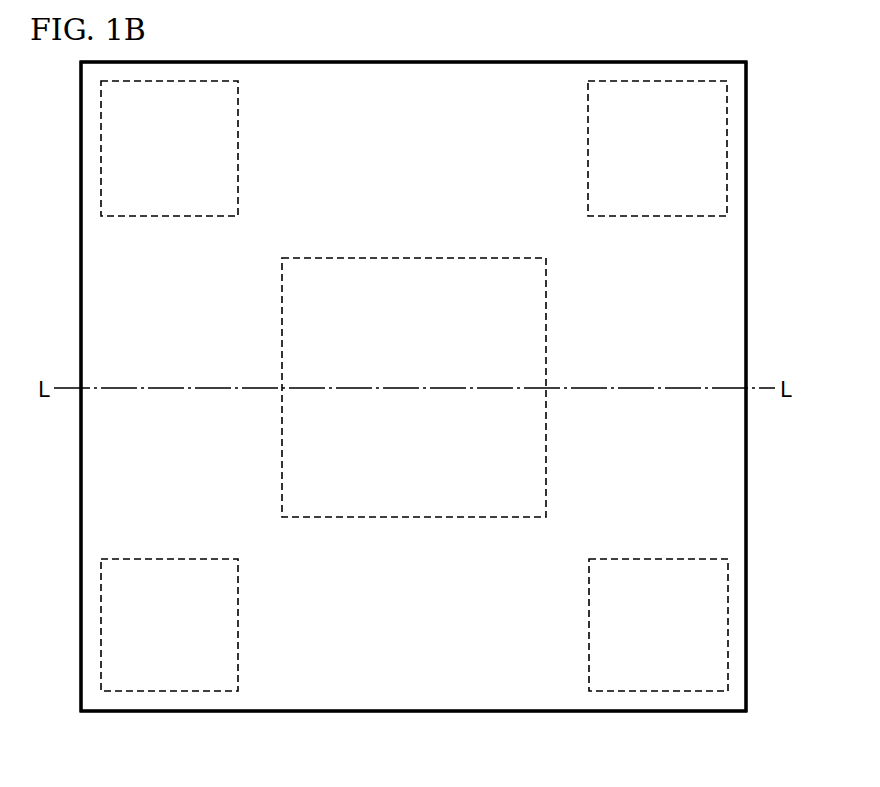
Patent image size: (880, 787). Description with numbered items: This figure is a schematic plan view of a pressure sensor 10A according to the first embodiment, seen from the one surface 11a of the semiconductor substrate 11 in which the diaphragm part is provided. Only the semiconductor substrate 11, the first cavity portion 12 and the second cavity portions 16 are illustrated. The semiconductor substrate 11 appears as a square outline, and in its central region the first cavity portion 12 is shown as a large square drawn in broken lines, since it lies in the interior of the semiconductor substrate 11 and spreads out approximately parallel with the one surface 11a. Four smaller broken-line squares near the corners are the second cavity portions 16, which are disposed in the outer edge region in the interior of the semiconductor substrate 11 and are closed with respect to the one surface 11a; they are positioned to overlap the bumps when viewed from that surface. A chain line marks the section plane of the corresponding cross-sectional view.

The pressure sensor 10A is at (832, 20).
The semiconductor substrate 11 is at (735, 308).
The one surface of the semiconductor substrate 11a is at (727, 251).
The first cavity portion 12 is at (413, 490).
The second cavity portion 16 is at (111, 153).